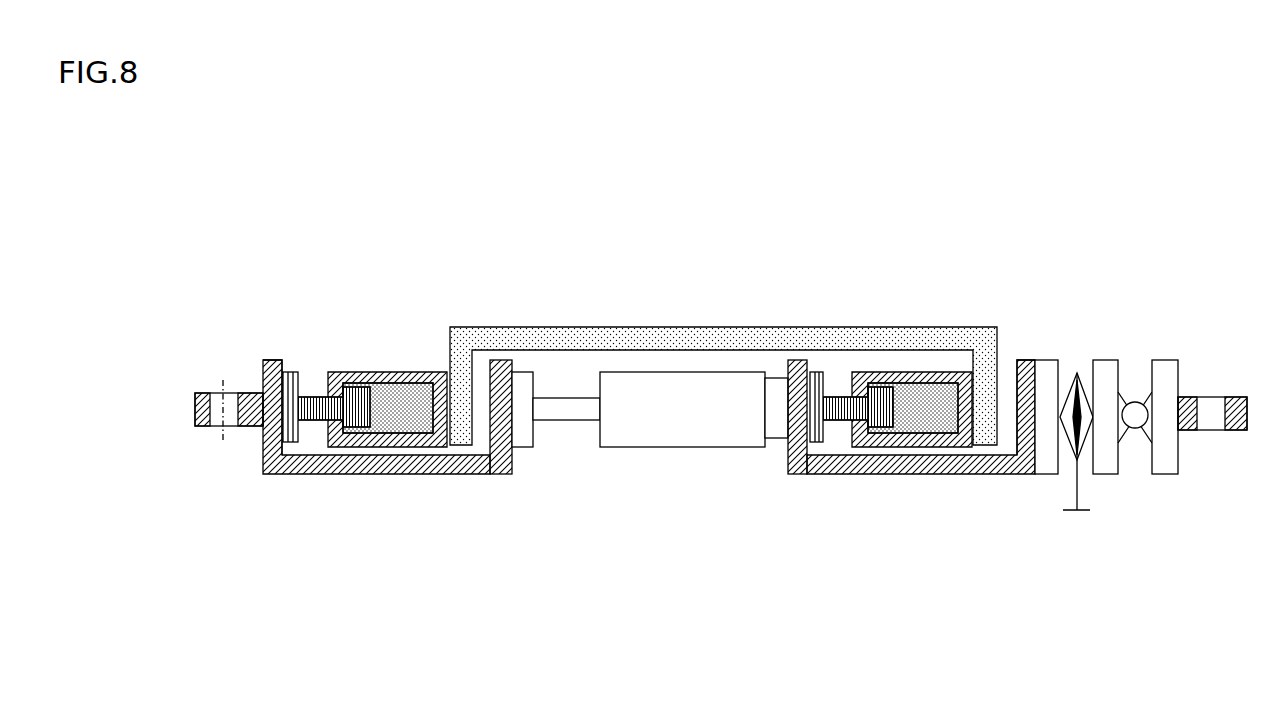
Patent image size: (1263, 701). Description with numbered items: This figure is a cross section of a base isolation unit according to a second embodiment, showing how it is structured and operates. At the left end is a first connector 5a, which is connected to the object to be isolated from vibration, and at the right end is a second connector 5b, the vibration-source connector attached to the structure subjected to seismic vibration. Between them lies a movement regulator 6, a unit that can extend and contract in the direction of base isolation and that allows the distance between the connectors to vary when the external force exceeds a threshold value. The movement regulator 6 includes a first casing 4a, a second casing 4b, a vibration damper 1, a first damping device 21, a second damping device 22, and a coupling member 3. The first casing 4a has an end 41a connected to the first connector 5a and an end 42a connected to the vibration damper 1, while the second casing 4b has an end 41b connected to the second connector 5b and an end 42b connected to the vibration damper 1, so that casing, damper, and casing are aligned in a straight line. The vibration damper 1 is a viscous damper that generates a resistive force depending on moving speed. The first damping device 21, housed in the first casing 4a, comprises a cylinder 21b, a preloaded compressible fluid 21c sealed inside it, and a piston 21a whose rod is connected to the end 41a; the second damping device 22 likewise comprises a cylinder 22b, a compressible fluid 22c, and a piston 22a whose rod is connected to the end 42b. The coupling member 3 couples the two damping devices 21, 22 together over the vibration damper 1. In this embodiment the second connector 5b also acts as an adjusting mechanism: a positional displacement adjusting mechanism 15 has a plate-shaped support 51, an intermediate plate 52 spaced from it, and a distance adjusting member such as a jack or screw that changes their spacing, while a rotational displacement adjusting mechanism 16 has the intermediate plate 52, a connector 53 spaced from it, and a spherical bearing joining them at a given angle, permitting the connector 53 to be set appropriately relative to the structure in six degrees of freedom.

The vibration damper 1 is at (673, 428).
The coupling member 3 is at (627, 346).
The first casing 4a is at (378, 475).
The second casing 4b is at (910, 475).
The first connector 5a is at (213, 427).
The second connector 5b is at (1240, 568).
The movement regulator 6 is at (1033, 193).
The positional displacement adjusting mechanism 15 is at (1080, 430).
The rotational displacement adjusting mechanism 16 is at (1133, 425).
The first damping device 21 is at (462, 273).
The piston 21a is at (317, 383).
The cylinder 21b is at (380, 374).
The compressible fluid 21c is at (421, 375).
The second damping device 22 is at (990, 272).
The piston 22a is at (841, 383).
The cylinder 22b is at (903, 374).
The compressible fluid 22c is at (946, 375).
The end of first casing 41a is at (267, 440).
The end of second casing 41b is at (1015, 474).
The end of first casing 42a is at (493, 440).
The end of second casing 42b is at (790, 443).
The support 51 is at (1045, 372).
The intermediate plate 52 is at (1107, 372).
The connector 53 is at (1165, 372).